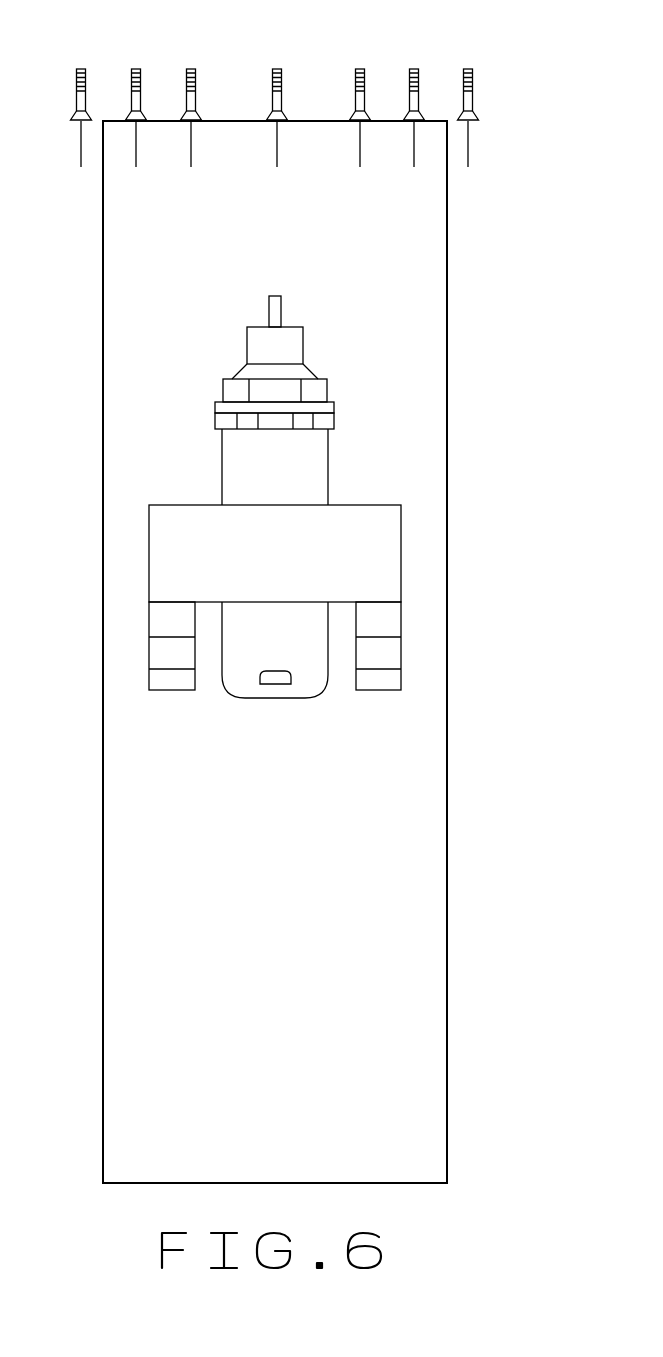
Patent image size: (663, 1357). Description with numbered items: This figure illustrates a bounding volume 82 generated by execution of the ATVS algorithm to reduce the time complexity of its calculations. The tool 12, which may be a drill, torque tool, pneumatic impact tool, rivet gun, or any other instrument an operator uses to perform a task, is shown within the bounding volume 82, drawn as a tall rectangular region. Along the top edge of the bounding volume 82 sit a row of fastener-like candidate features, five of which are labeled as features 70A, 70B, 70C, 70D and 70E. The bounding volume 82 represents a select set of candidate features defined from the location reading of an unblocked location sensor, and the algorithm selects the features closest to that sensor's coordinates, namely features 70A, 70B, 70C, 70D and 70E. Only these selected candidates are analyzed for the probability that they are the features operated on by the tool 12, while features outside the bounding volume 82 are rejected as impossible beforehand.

The tool 12 is at (375, 532).
The bounding volume 82 is at (103, 998).
The feature 70A is at (414, 69).
The feature 70B is at (360, 69).
The feature 70C is at (277, 69).
The feature 70D is at (191, 69).
The feature 70E is at (139, 69).